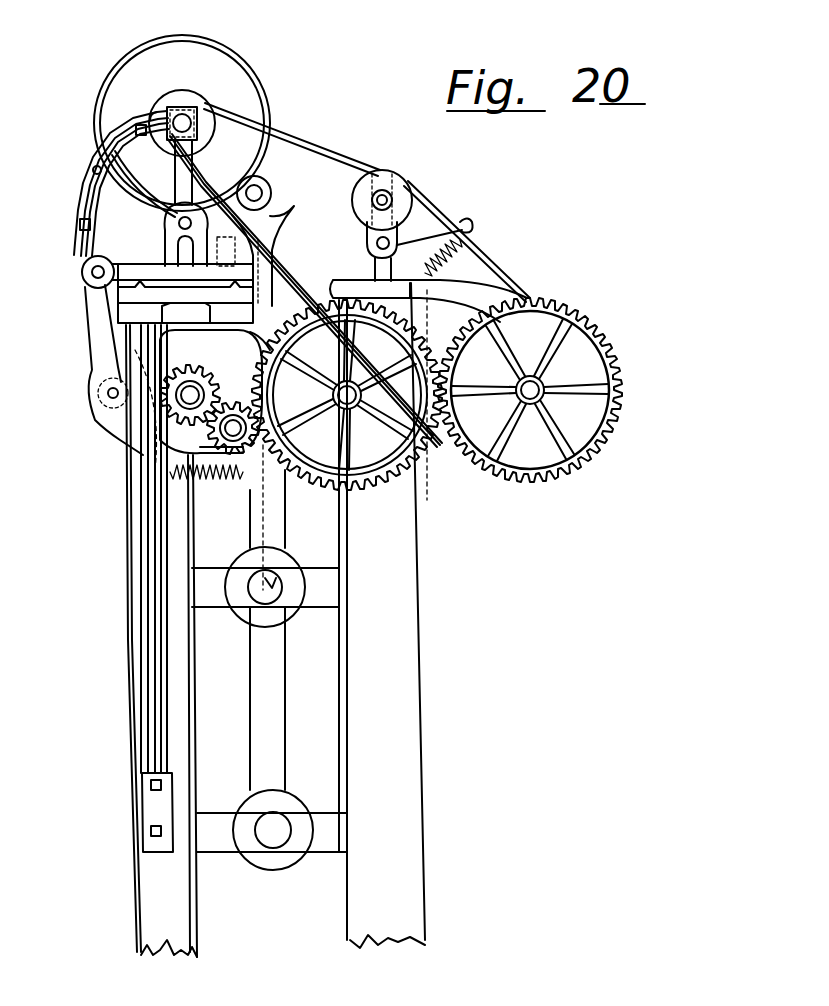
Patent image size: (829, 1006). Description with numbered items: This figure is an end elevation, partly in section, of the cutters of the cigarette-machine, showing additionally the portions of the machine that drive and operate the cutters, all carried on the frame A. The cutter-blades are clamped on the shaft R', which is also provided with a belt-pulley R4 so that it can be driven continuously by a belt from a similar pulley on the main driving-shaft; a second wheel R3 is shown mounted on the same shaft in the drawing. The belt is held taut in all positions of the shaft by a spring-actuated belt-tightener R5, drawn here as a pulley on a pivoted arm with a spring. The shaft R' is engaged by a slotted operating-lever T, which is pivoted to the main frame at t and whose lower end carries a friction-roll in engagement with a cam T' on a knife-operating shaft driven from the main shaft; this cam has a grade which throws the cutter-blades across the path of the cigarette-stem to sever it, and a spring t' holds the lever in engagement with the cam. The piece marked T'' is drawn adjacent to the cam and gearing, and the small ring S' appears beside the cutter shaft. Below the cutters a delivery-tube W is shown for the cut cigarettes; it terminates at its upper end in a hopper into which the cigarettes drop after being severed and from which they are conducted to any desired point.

The fly wheel R3 is at (226, 64).
The belt-pulley R4 is at (200, 100).
The shaft R' is at (241, 176).
The spring-actuated belt-tightener R5 is at (408, 205).
The ring S' is at (270, 193).
The delivery-tube W is at (270, 233).
The slotted operating-lever T is at (106, 183).
The pivot t is at (85, 283).
The cam T' is at (148, 392).
The bracket T'' is at (294, 300).
The spring t' is at (206, 492).
The frame plate A is at (140, 392).